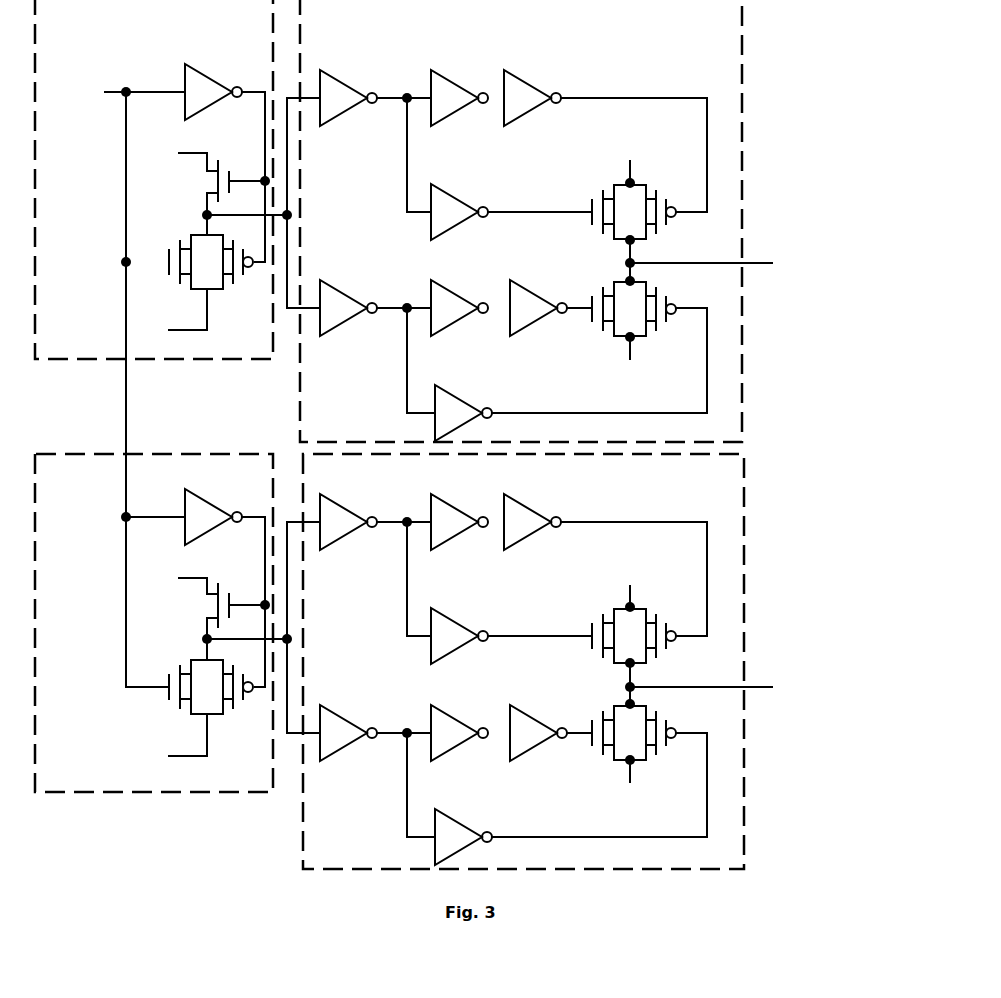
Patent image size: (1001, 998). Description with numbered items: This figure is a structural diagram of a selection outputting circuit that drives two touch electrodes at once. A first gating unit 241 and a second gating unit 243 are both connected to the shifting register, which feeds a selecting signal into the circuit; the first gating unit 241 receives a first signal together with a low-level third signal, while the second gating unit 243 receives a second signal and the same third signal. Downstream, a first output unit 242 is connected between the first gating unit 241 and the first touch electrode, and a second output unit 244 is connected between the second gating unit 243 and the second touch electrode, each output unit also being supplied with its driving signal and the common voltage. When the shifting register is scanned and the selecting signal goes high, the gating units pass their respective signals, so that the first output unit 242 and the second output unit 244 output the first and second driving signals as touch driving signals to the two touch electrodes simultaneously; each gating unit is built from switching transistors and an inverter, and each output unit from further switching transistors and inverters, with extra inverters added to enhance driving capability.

The first gating unit 241 is at (183, 359).
The first output unit 242 is at (742, 318).
The second gating unit 243 is at (158, 792).
The second output unit 244 is at (744, 752).